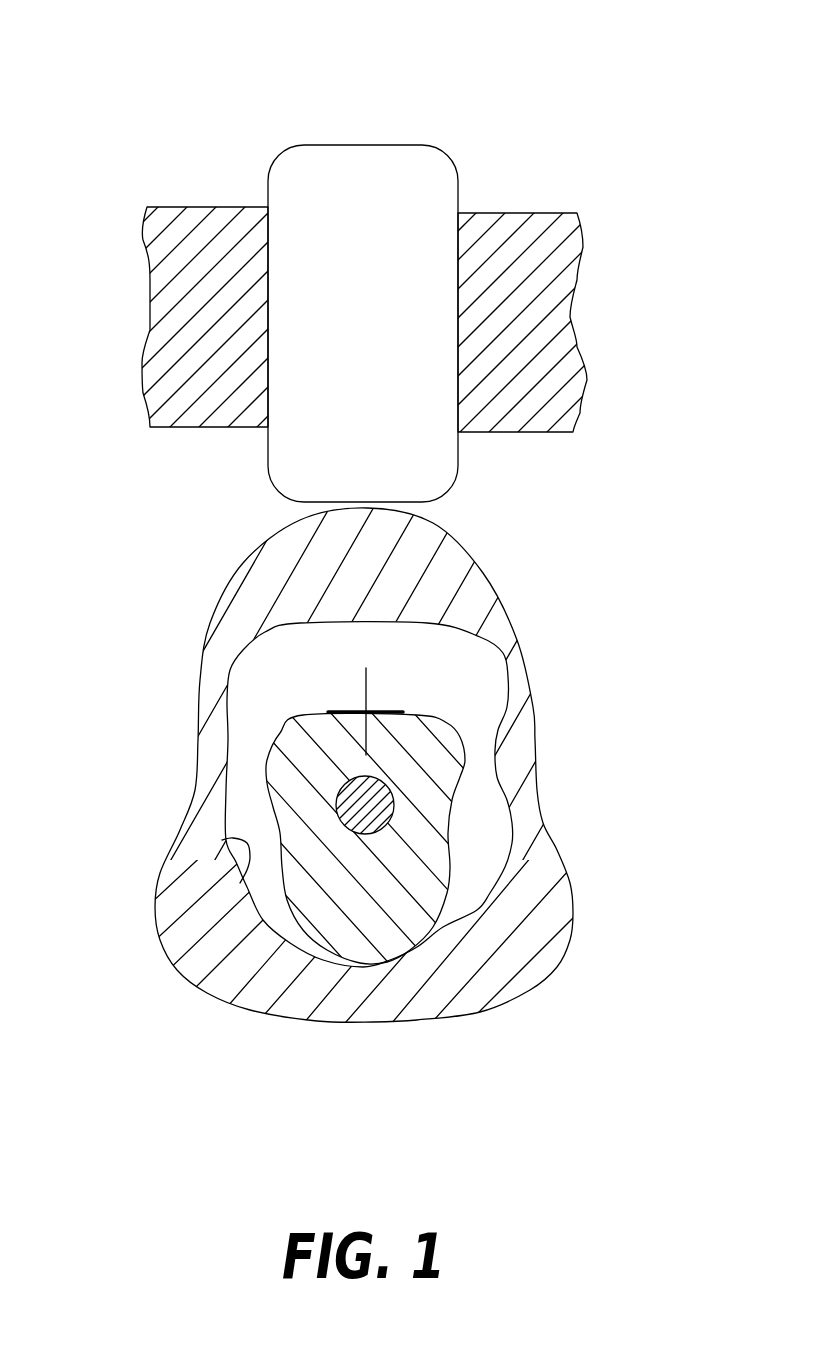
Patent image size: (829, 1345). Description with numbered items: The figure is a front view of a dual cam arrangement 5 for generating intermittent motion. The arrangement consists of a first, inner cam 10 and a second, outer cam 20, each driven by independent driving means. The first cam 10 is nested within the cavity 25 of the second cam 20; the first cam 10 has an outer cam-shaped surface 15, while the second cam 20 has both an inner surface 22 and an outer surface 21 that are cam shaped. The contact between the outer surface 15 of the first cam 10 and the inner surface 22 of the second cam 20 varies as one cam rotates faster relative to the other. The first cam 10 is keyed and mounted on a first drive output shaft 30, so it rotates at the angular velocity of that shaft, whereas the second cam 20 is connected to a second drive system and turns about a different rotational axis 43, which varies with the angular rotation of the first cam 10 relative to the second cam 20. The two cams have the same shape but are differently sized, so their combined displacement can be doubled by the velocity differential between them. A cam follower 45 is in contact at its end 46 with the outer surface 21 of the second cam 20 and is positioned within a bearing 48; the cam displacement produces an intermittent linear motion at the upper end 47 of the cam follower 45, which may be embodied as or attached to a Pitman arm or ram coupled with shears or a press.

The dual cam arrangement 5 is at (392, 1080).
The first cam 10 is at (410, 868).
The outer surface 15 is at (460, 767).
The second cam 20 is at (540, 933).
The outer surface 21 is at (165, 957).
The inner surface 22 is at (220, 838).
The cavity 25 is at (458, 672).
The first drive output shaft 30 is at (363, 802).
The rotational axis 43 is at (364, 712).
The cam follower 45 is at (415, 210).
The end 46 is at (370, 510).
The upper end 47 is at (358, 145).
The bearing 48 is at (207, 222).